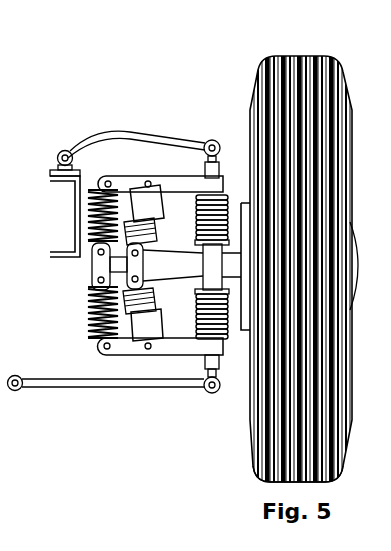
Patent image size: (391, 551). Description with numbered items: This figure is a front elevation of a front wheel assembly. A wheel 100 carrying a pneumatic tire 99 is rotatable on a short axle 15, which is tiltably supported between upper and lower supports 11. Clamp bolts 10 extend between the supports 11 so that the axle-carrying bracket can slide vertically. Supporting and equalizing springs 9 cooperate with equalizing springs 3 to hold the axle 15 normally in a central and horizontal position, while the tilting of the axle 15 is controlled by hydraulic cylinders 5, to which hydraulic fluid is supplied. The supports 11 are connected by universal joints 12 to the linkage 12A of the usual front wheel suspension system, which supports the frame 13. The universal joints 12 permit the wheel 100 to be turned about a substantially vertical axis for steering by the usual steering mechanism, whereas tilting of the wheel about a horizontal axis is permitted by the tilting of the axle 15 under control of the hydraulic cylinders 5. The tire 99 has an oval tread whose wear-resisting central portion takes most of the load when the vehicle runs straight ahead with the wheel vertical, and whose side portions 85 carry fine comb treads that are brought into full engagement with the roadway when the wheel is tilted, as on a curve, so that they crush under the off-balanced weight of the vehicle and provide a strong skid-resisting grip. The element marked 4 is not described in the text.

The equalizing springs 3 is at (90, 190).
The piston 4 is at (152, 238).
The hydraulic cylinders 5 is at (147, 263).
The supporting and equalizing springs 9 is at (229, 224).
The clamp bolts 10 is at (200, 358).
The upper and lower supports 11 is at (168, 177).
The universal joints 12 is at (210, 140).
The linkage 12A is at (101, 138).
The frame 13 is at (75, 212).
The short axle 15 is at (166, 267).
The side portions of the tread 85 is at (338, 57).
The tire 99 is at (326, 477).
The wheel 100 is at (252, 108).